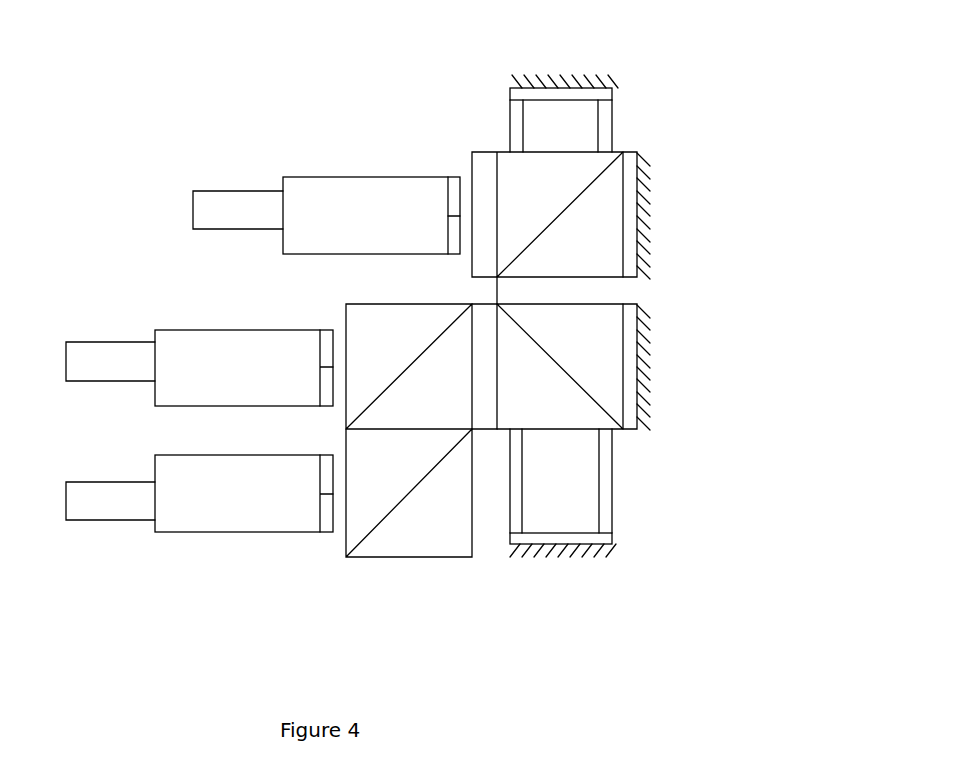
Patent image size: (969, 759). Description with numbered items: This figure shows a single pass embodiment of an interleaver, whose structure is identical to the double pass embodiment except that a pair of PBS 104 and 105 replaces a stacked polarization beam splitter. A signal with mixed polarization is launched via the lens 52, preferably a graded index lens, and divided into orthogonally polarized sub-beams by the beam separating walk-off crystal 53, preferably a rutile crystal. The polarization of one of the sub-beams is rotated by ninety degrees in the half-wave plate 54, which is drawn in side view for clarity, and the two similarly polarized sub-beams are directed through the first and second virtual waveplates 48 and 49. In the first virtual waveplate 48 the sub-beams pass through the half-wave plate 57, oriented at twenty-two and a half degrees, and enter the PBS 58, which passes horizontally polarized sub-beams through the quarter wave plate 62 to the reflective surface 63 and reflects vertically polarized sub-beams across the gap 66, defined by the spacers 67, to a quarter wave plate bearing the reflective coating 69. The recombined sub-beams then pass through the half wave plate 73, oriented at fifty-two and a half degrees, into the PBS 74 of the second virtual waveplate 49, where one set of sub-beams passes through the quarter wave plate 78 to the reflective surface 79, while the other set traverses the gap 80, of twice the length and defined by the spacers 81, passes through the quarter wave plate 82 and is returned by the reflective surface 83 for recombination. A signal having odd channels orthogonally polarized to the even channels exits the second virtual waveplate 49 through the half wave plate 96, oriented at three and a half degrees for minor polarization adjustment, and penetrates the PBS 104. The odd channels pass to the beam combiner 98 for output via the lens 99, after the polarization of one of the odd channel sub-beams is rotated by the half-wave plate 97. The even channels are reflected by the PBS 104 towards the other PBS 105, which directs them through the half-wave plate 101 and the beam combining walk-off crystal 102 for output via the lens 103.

The first virtual waveplate 48 is at (718, 172).
The second virtual waveplate 49 is at (754, 387).
The lens 52 is at (195, 213).
The beam splitter 53 is at (306, 191).
The polarization rotator 54 is at (456, 190).
The half-wave plate 57 is at (469, 163).
The PBS 58 is at (605, 190).
The quarter wave plate 62 is at (628, 247).
The reflective surface 63 is at (660, 225).
The gap 66 is at (574, 131).
The spacers 67 is at (609, 113).
The reflective coating 69 is at (536, 62).
The half wave plate 73 is at (639, 290).
The PBS 74 is at (590, 417).
The quarter wave plate 78 is at (628, 382).
The reflective surface 79 is at (660, 363).
The gap 80 is at (574, 491).
The spacers 81 is at (612, 482).
The quarter wave plate 82 is at (612, 533).
The reflective surface 83 is at (565, 564).
The half wave plate 96 is at (478, 444).
The half wave plate 97 is at (323, 342).
The beam combining walk-off crystal 98 is at (172, 342).
The lens 99 is at (97, 381).
The half-wave plate 101 is at (323, 533).
The beam-combining walk-off crystal 102 is at (192, 512).
The focusing lens 103 is at (97, 512).
The PBS 104 is at (420, 323).
The PBS 105 is at (382, 550).